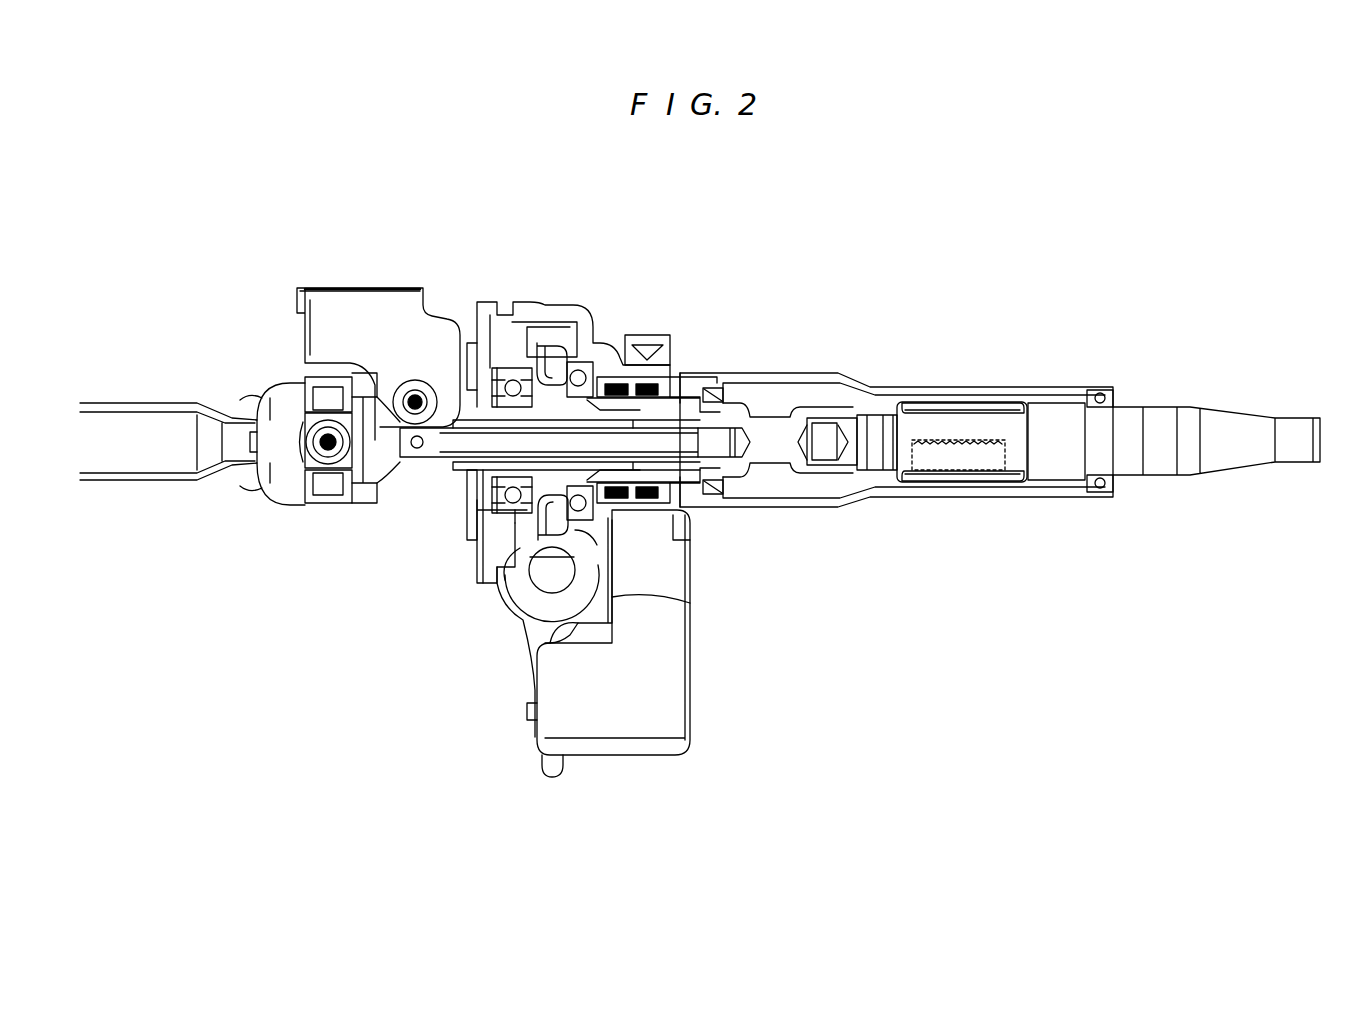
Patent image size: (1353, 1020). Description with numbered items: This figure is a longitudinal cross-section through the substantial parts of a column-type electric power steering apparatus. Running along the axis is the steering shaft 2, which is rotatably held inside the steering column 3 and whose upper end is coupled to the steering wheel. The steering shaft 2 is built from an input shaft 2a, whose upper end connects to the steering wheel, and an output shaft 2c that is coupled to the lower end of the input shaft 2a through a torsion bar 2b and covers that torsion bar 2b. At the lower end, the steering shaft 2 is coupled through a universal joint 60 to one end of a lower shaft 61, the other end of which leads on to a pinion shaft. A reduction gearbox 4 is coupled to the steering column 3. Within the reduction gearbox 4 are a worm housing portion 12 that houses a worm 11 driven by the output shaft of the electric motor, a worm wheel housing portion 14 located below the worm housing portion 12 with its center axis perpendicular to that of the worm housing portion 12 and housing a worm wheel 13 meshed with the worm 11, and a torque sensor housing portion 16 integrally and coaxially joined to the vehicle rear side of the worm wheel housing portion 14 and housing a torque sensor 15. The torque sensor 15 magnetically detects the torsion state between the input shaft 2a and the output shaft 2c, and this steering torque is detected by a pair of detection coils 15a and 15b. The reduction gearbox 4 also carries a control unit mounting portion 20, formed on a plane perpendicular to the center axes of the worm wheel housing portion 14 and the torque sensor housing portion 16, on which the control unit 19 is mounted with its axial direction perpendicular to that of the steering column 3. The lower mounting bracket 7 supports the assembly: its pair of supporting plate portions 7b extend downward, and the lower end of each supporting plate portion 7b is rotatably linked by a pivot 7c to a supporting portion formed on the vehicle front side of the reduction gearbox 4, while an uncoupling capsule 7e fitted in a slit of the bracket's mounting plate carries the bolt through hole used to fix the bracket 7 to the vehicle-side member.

The steering shaft 2 is at (415, 478).
The input shaft 2a is at (770, 440).
The torsion bar 2b is at (720, 445).
The output shaft 2c is at (463, 460).
The steering column 3 is at (957, 395).
The reduction gearbox 4 is at (575, 345).
The lower mounting bracket 7 is at (410, 288).
The supporting plate portion 7b is at (325, 330).
The pivot 7c is at (415, 402).
The uncoupling capsule 7e is at (327, 290).
The worm 11 is at (552, 580).
The worm housing portion 12 is at (500, 583).
The worm wheel 13 is at (545, 335).
The worm wheel housing portion 14 is at (525, 318).
The torque sensor 15 is at (685, 258).
The detection coil 15a is at (620, 378).
The detection coil 15b is at (652, 378).
The torque sensor housing portion 16 is at (680, 352).
The control unit 19 is at (693, 690).
The control unit mounting portion 20 is at (690, 603).
The universal joint 60 is at (280, 385).
The lower shaft 61 is at (135, 400).